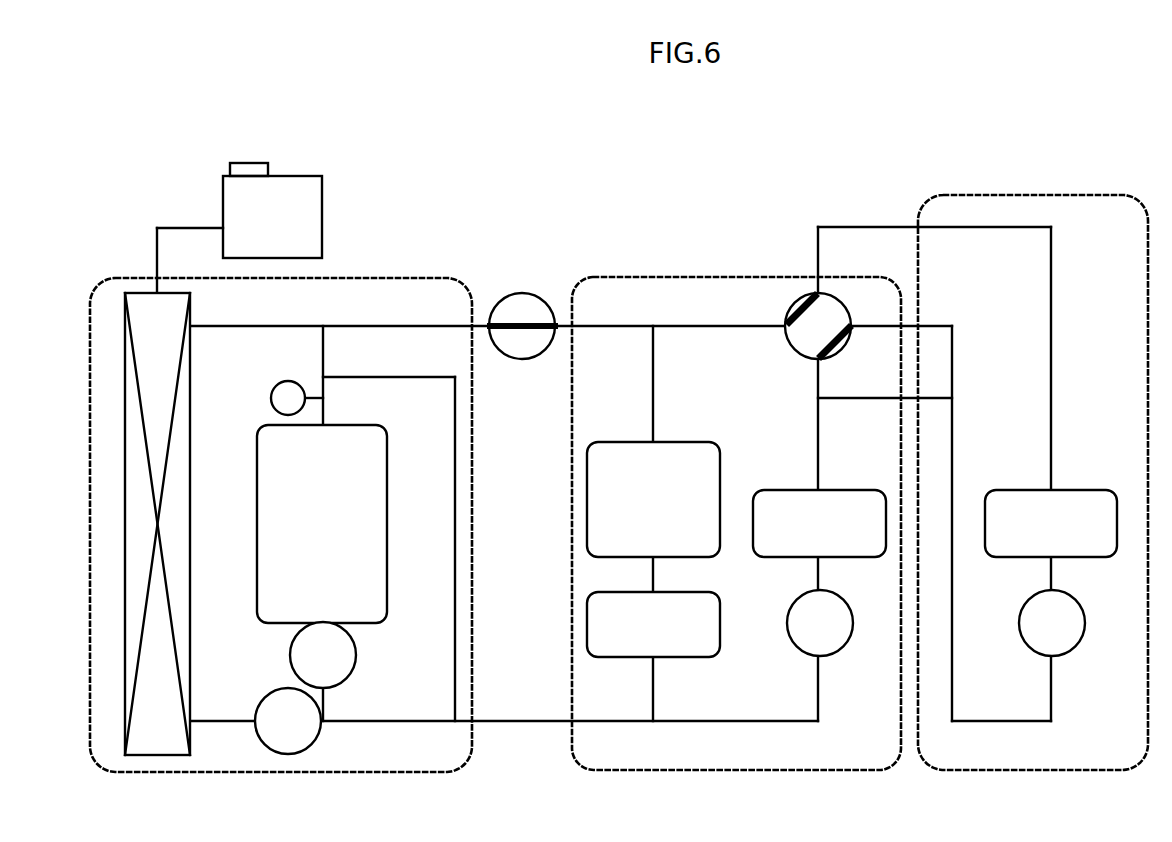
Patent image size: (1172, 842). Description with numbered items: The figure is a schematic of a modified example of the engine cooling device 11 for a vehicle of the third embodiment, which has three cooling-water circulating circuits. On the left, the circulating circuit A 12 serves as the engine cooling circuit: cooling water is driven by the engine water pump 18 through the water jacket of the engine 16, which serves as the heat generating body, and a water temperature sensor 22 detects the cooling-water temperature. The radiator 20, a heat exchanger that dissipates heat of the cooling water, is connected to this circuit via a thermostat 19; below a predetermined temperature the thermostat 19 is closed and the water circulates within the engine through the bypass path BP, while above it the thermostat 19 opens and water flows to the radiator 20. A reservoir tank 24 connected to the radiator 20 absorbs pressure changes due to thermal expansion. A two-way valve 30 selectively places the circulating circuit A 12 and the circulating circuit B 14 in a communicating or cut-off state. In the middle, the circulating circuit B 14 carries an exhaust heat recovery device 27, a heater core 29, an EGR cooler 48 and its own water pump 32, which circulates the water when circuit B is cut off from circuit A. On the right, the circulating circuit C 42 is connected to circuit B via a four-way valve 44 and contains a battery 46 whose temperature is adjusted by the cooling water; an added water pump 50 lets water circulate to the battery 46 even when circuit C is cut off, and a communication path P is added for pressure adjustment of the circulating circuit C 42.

The engine cooling device for a vehicle 11 is at (677, 180).
The circulating circuit A 12 is at (423, 278).
The circulating circuit B 14 is at (773, 277).
The engine 16 is at (387, 455).
The engine water pump 18 is at (357, 655).
The thermostat 19 is at (312, 742).
The radiator 20 is at (193, 522).
The water temperature sensor 22 is at (275, 387).
The reservoir tank 24 is at (322, 192).
The exhaust heat recovery device 27 is at (687, 442).
The heater core 29 is at (840, 490).
The two-way valve 30 is at (540, 297).
The water pump 32 is at (787, 627).
The circulating circuit C 42 is at (1105, 195).
The four-way valve 44 is at (792, 349).
The battery 46 is at (1070, 490).
The EGR cooler 48 is at (720, 622).
The water pump 50 is at (1022, 640).
The bypass path BP is at (455, 480).
The communication path P is at (858, 398).